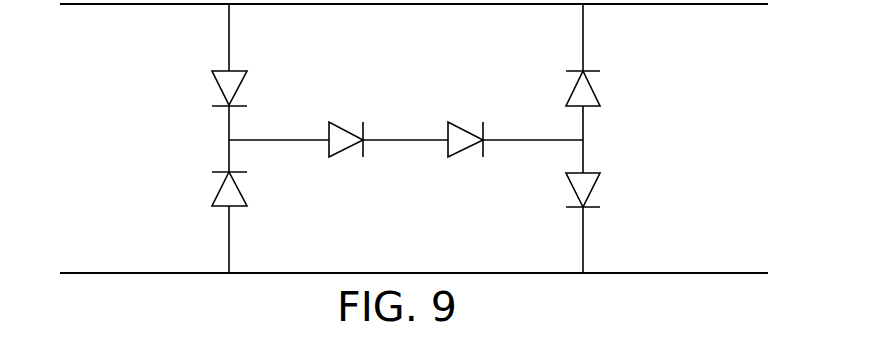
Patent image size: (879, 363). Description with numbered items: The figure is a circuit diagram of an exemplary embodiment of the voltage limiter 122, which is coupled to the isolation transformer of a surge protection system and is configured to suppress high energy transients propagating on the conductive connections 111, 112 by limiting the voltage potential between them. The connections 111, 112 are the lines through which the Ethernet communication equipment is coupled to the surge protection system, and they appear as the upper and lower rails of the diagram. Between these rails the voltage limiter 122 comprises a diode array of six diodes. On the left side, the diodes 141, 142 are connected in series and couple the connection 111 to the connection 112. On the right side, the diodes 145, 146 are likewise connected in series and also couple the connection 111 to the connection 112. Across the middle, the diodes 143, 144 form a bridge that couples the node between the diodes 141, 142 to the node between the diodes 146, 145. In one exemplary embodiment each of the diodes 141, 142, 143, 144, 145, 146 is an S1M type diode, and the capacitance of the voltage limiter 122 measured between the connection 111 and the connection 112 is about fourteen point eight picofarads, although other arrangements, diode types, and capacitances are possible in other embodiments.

The conductive connection 111 is at (666, 5).
The conductive connection 112 is at (667, 272).
The voltage limiter 122 is at (748, 92).
The diode 141 is at (240, 71).
The diode 142 is at (240, 197).
The diode 143 is at (337, 123).
The diode 144 is at (456, 123).
The diode 145 is at (594, 98).
The diode 146 is at (594, 173).